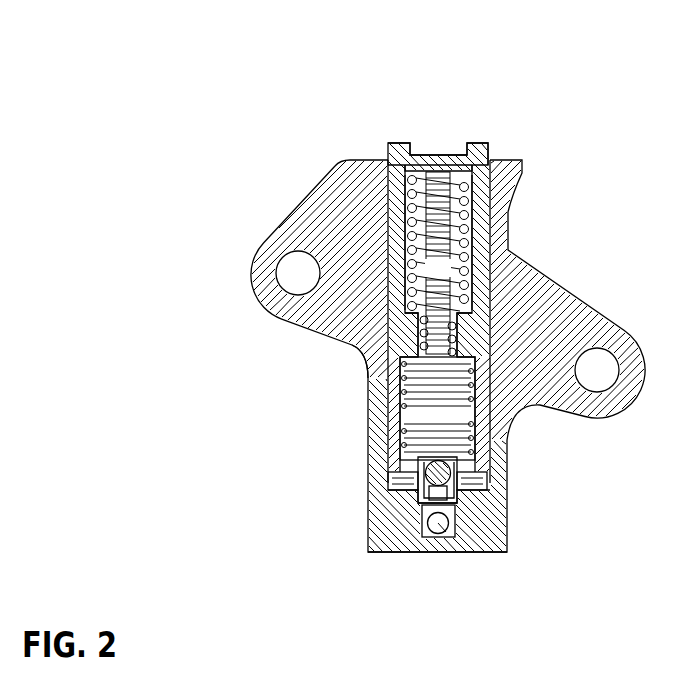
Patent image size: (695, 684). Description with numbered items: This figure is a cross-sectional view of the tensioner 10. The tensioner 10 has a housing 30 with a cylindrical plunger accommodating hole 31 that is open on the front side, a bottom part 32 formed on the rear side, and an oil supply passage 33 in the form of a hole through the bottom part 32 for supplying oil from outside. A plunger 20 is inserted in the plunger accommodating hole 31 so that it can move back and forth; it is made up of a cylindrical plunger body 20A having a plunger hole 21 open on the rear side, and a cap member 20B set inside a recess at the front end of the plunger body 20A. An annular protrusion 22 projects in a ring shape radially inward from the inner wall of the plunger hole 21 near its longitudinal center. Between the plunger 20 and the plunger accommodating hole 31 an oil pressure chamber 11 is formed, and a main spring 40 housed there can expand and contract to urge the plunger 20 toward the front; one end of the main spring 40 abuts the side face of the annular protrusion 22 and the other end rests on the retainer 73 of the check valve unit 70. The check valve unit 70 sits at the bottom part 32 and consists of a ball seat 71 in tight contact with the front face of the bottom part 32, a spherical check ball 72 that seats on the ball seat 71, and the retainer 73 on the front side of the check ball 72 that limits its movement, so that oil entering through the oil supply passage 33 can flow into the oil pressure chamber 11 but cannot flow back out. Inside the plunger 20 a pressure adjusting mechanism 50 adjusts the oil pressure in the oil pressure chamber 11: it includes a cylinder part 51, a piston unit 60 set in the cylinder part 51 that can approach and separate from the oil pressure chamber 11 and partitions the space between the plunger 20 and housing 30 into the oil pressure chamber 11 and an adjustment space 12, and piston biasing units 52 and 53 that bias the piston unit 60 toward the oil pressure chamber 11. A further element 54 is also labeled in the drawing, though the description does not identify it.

The tensioner 10 is at (283, 82).
The oil pressure chamber 11 is at (438, 408).
The adjustment space 12 is at (438, 263).
The plunger 20 is at (619, 80).
The plunger body 20A is at (493, 165).
The cap member 20B is at (480, 150).
The plunger hole 21 is at (402, 392).
The annular protrusion 22 is at (488, 310).
The housing 30 is at (560, 340).
The plunger accommodating hole 31 is at (410, 485).
The bottom part 32 is at (370, 555).
The oil supply passage 33 is at (445, 553).
The main spring 40 is at (392, 425).
The pressure adjusting mechanism 50 is at (512, 250).
The cylinder part 51 is at (360, 351).
The piston biasing unit 52 is at (405, 250).
The piston biasing unit 53 is at (400, 252).
The outer spring 54 is at (405, 206).
The piston unit 60 is at (405, 318).
The check valve unit 70 is at (584, 465).
The ball seat 71 is at (455, 507).
The check ball 72 is at (460, 486).
The retainer 73 is at (470, 462).